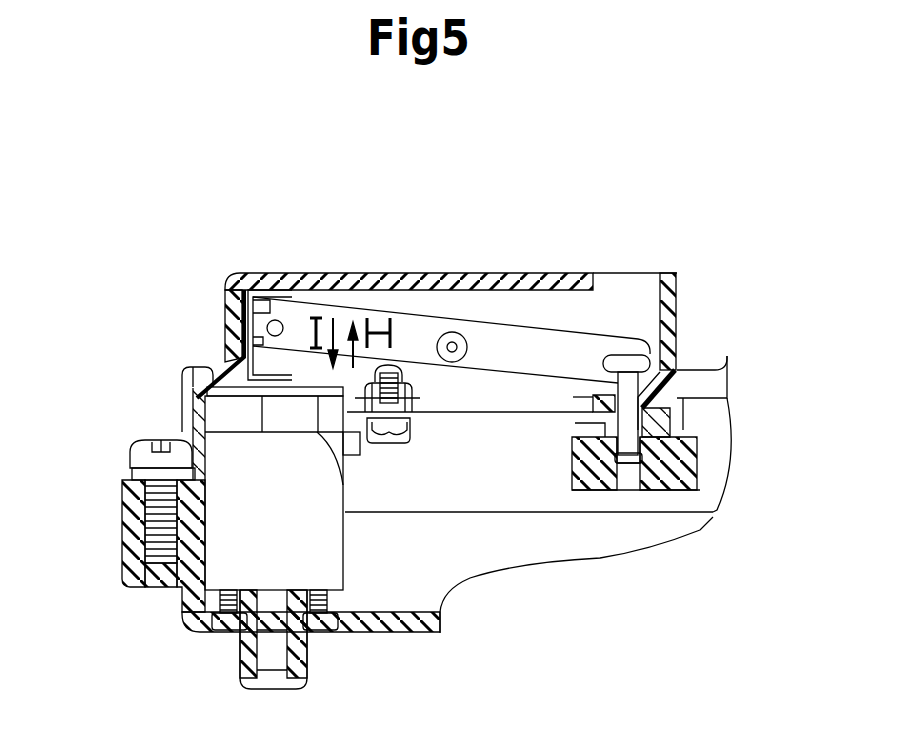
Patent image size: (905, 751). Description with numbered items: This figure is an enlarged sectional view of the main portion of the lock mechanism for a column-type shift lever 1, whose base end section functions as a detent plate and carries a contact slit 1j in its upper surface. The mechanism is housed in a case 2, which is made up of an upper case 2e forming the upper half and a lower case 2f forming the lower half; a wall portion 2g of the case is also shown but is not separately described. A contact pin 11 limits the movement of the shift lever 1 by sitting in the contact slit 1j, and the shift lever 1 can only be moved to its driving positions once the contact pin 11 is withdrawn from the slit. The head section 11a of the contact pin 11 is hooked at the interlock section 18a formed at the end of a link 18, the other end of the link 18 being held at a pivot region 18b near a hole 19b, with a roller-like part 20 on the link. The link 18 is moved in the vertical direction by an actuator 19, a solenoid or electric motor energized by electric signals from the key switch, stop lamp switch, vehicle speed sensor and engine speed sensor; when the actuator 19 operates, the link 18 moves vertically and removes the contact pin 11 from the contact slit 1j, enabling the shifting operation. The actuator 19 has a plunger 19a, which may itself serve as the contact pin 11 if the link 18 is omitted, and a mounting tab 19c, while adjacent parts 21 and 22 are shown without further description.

The shift lever 1 is at (675, 432).
The contact slit 1j is at (670, 462).
The case 2 is at (160, 419).
The upper case 2e is at (272, 272).
The lower case 2f is at (372, 633).
The housing top wall 2g is at (430, 272).
The contact pin 11 is at (683, 400).
The head section 11a is at (650, 362).
The link 18 is at (547, 333).
The interlock section 18a is at (630, 342).
The pivot block 18b is at (244, 316).
The actuator 19 is at (217, 560).
The plunger 19a is at (273, 413).
The pivot hole 19b is at (280, 322).
The mounting tab 19c is at (182, 398).
The roller 20 is at (465, 335).
The spring seat 21 is at (412, 423).
The adjusting screw 22 is at (404, 372).